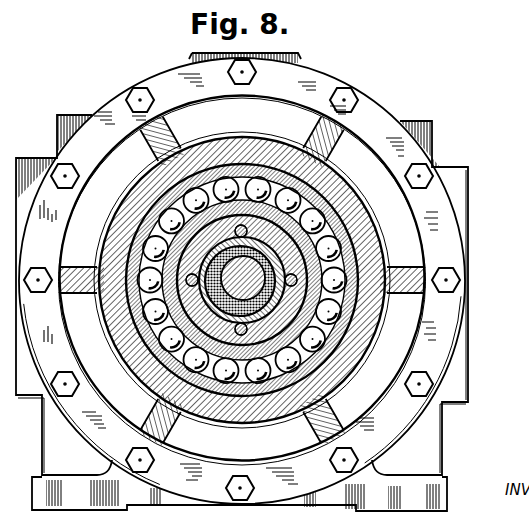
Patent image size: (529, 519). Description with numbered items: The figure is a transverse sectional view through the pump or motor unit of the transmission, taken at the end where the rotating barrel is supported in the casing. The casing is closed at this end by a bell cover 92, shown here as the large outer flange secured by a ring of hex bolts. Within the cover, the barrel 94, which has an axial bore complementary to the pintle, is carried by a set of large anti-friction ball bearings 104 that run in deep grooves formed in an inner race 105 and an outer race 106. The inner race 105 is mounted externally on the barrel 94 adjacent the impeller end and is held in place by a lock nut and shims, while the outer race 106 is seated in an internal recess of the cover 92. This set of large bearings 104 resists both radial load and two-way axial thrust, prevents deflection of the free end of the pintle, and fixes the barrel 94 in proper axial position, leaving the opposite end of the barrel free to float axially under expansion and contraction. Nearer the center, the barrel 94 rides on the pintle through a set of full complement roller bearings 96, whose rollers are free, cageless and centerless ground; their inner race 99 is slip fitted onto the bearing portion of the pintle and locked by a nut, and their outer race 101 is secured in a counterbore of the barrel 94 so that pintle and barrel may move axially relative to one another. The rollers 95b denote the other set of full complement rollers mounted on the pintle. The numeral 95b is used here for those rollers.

The bell cover 92 is at (375, 110).
The barrel 94 is at (146, 284).
The resilient bushing 95b is at (366, 252).
The anti-friction roller bearings 96 is at (343, 229).
The inner race 99 is at (352, 246).
The outer race 101 is at (330, 234).
The anti-friction ball bearings 104 is at (170, 262).
The inner race 105 is at (180, 272).
The outer race 106 is at (157, 240).